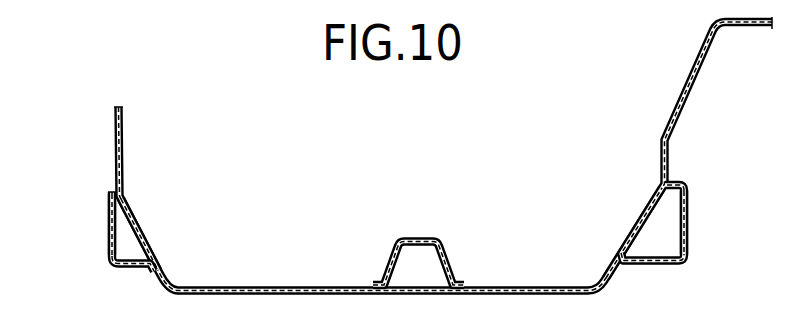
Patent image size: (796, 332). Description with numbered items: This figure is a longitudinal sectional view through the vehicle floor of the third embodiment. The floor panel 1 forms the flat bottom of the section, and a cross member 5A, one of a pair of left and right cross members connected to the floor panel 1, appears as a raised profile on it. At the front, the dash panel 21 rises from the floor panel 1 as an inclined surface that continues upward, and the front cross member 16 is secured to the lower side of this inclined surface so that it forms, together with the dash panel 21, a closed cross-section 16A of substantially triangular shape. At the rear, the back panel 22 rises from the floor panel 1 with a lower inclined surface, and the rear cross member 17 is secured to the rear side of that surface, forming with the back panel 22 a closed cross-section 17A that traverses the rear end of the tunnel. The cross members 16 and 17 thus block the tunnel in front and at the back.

The floor panel 1 is at (524, 286).
The cross member 5A is at (419, 237).
The cross member 16 is at (132, 268).
The closed cross-section 16A is at (121, 234).
The cross member 17 is at (650, 265).
The closed cross-section 17A is at (663, 226).
The dash panel 21 is at (143, 238).
The back panel 22 is at (633, 228).